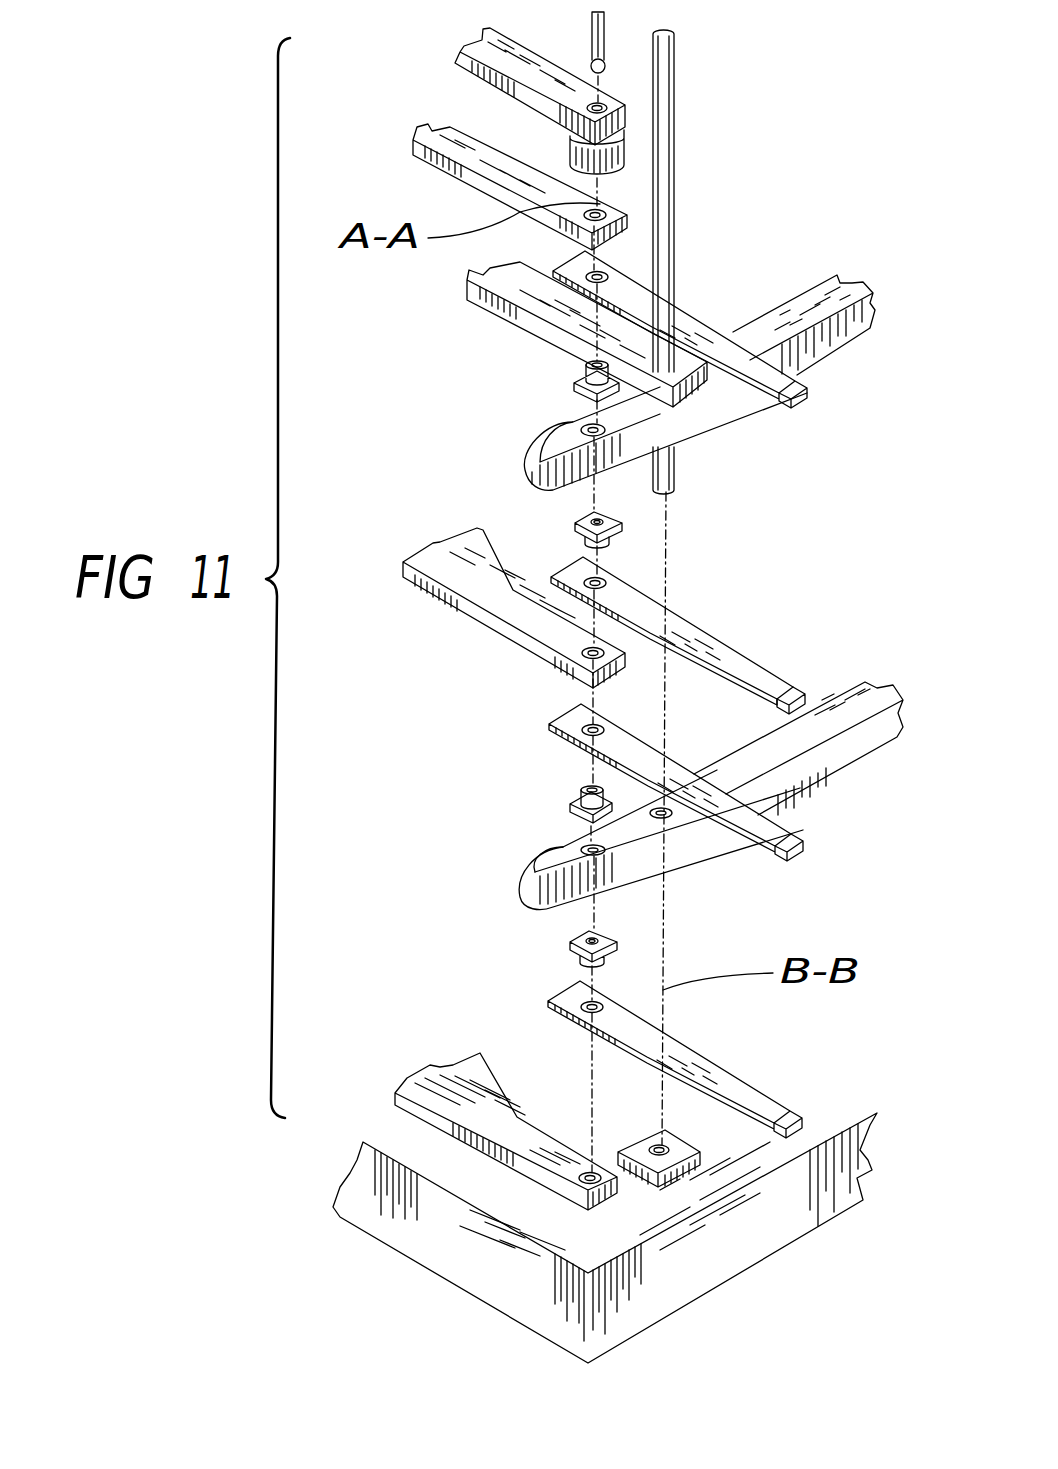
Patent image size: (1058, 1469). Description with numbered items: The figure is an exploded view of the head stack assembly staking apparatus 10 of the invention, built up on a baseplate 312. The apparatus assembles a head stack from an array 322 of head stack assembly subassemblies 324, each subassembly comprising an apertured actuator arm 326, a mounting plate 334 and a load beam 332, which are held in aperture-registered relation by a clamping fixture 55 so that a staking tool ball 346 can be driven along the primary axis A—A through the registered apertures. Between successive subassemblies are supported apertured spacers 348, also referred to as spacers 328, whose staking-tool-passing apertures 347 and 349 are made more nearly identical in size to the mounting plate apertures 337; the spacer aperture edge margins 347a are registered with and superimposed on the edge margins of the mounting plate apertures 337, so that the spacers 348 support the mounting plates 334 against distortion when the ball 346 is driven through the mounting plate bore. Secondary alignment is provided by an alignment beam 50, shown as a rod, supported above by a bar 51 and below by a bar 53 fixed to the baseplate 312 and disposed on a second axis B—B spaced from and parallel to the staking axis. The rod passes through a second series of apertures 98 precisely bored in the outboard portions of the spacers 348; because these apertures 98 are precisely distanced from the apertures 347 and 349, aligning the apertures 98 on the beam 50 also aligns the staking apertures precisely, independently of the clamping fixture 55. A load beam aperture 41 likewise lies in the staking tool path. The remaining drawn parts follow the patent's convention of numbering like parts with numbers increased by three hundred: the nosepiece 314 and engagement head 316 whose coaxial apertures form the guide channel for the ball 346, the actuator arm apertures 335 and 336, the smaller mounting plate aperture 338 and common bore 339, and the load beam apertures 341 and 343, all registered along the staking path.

The head stack assembly staking apparatus 10 is at (495, 368).
The load beam aperture 41 is at (607, 580).
The alignment beam 50 is at (676, 163).
The bar 51 is at (533, 298).
The bar 53 is at (642, 1138).
The clamping fixture 55 is at (410, 541).
The second series apertures 98 is at (672, 813).
The baseplate 312 is at (768, 1167).
The cylindrical spacer 314 is at (625, 155).
The upper bar 316 is at (520, 153).
The array 322 is at (490, 623).
The head stack assembly subassembly 324 is at (680, 613).
The actuator arm 326 is at (417, 132).
The apertured spacer 328 is at (592, 34).
The load beam 332 is at (742, 652).
The mounting plate 334 is at (623, 540).
The hole 335 is at (603, 211).
The tapered plate 336 is at (590, 265).
The mounting plate aperture 337 is at (578, 513).
The washer 338 is at (614, 542).
The boss 339 is at (580, 787).
The tapered plate 341 is at (568, 713).
The hole 343 is at (587, 750).
The staking tool ball 346 is at (606, 62).
The spacer aperture 347 is at (586, 848).
The edge margin 347a is at (530, 878).
The spacer 348 is at (807, 290).
The spacer aperture 349 is at (597, 900).